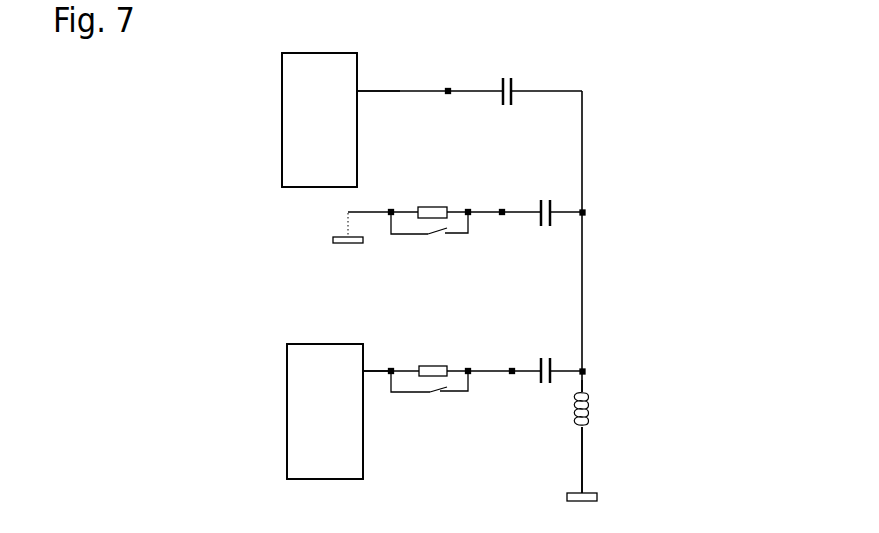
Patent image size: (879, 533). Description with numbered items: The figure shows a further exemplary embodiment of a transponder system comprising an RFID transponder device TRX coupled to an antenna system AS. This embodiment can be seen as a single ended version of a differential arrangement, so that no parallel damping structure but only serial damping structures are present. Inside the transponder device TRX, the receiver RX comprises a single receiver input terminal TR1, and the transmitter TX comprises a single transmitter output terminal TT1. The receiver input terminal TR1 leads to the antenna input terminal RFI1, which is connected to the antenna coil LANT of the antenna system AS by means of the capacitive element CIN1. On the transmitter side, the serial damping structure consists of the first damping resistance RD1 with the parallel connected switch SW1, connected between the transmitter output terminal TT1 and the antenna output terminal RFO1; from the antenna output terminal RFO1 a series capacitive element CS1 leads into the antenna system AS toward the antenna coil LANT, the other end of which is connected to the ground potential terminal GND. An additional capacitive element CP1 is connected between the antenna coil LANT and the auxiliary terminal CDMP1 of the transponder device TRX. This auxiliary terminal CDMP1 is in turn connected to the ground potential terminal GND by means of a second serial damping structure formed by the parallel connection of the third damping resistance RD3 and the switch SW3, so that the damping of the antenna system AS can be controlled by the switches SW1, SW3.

The transponder device TRX is at (252, 104).
The receiver RX is at (319, 120).
The transmitter TX is at (325, 411).
The receiver input terminal TR1 is at (368, 73).
The antenna input terminal RFI1 is at (448, 89).
The capacitive element CIN1 is at (517, 78).
The third damping resistance RD3 is at (433, 207).
The switch SW3 is at (434, 235).
The auxiliary terminal CDMP1 is at (502, 211).
The capacitive element CP1 is at (548, 230).
The ground potential terminal GND is at (470, 385).
The transmitter output terminal TT1 is at (365, 370).
The first damping resistance RD1 is at (435, 365).
The switch SW1 is at (435, 392).
The antenna output terminal RFO1 is at (512, 372).
The capacitive element CS1 is at (548, 354).
The antenna system AS is at (654, 367).
The antenna coil LANT is at (620, 411).